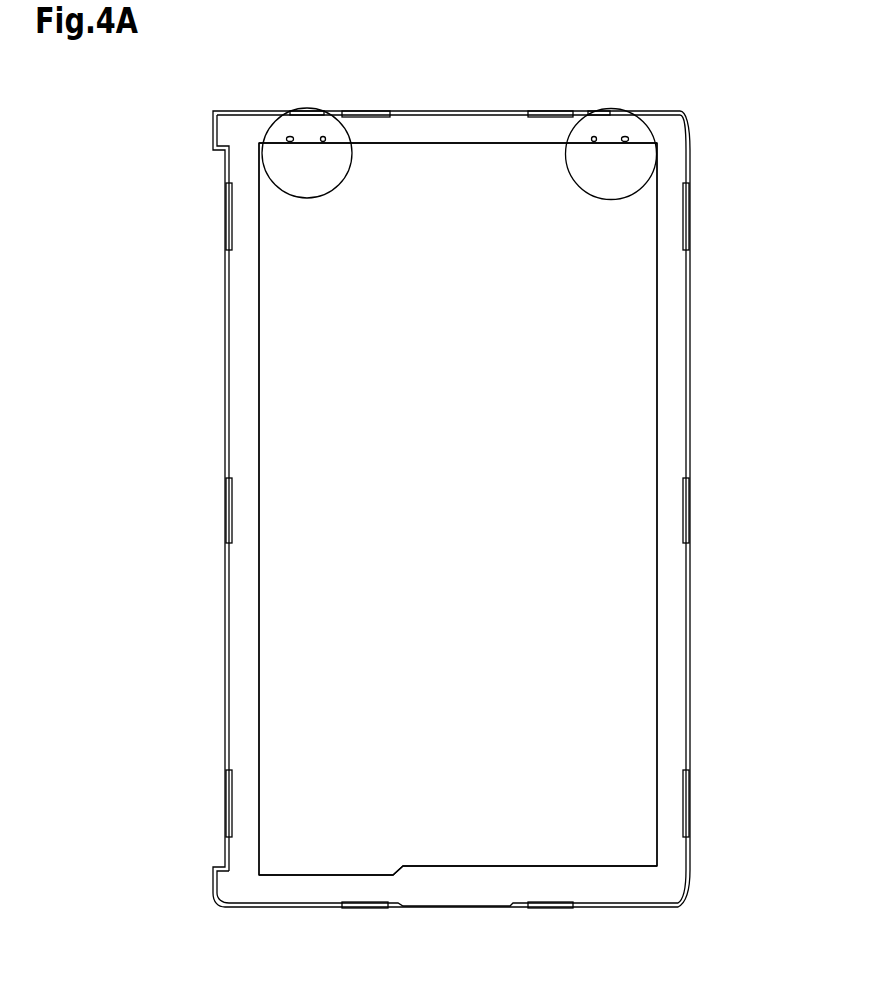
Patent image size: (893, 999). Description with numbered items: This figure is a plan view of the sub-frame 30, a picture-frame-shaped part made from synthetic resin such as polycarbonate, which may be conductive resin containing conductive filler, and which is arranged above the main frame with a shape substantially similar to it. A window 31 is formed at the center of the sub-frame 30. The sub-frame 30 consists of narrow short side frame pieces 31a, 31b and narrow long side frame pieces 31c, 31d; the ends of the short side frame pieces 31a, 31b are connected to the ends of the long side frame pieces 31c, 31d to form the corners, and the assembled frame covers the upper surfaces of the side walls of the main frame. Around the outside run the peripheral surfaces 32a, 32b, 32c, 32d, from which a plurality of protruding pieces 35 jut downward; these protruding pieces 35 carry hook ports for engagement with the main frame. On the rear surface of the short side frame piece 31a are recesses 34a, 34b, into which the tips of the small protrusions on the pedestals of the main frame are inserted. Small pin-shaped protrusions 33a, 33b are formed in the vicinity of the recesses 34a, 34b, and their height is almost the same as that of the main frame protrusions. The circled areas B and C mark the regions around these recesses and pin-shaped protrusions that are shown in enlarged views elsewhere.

The sub-frame 30 is at (738, 141).
The window 31 is at (630, 415).
The short side frame piece 31a is at (493, 122).
The short side frame piece 31b is at (458, 888).
The long side frame piece 31c is at (236, 640).
The long side frame piece 31d is at (682, 650).
The peripheral surface 32a is at (423, 110).
The peripheral surface 32b is at (627, 908).
The peripheral surface 32c is at (229, 427).
The peripheral surface 32d is at (688, 333).
The small pin-shaped protrusion 33a is at (594, 136).
The small pin-shaped protrusion 33b is at (324, 136).
The recess 34a is at (627, 136).
The recess 34b is at (289, 136).
The protruding piece 35 is at (227, 213).
The B area B is at (304, 108).
The C area C is at (611, 108).